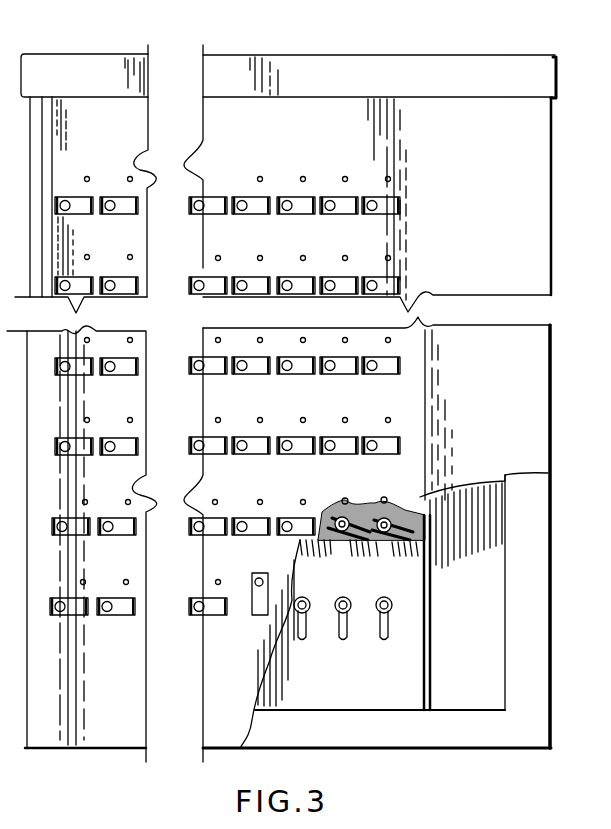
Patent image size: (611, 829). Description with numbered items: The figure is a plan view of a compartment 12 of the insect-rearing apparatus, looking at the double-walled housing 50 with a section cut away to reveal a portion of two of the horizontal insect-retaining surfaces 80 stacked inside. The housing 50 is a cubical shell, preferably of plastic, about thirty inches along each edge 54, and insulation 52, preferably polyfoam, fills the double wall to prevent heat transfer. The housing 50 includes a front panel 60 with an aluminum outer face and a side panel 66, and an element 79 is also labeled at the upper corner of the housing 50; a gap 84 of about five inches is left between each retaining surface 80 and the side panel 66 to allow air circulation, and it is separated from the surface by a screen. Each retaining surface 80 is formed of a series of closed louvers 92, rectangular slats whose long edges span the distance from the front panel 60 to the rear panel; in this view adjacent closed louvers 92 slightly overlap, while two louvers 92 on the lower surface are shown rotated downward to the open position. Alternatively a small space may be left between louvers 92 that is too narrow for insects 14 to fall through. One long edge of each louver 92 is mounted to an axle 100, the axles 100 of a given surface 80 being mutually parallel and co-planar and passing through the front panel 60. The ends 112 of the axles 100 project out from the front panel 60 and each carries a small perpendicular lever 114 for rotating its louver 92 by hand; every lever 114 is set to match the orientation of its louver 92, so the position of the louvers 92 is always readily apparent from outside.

The compartment 12 is at (397, 159).
The insects 14 is at (420, 497).
The housing 50 is at (551, 378).
The insulation 52 is at (546, 668).
The edge 54 is at (348, 97).
The front panel 60 is at (396, 159).
The side panel 66 is at (551, 257).
The rail end cap 79 is at (557, 80).
The insect-retaining surface 80 is at (433, 560).
The gap 84 is at (483, 632).
The louver 92 is at (372, 536).
The axle 100 is at (341, 533).
The axle end 112 is at (252, 614).
The lever 114 is at (298, 440).